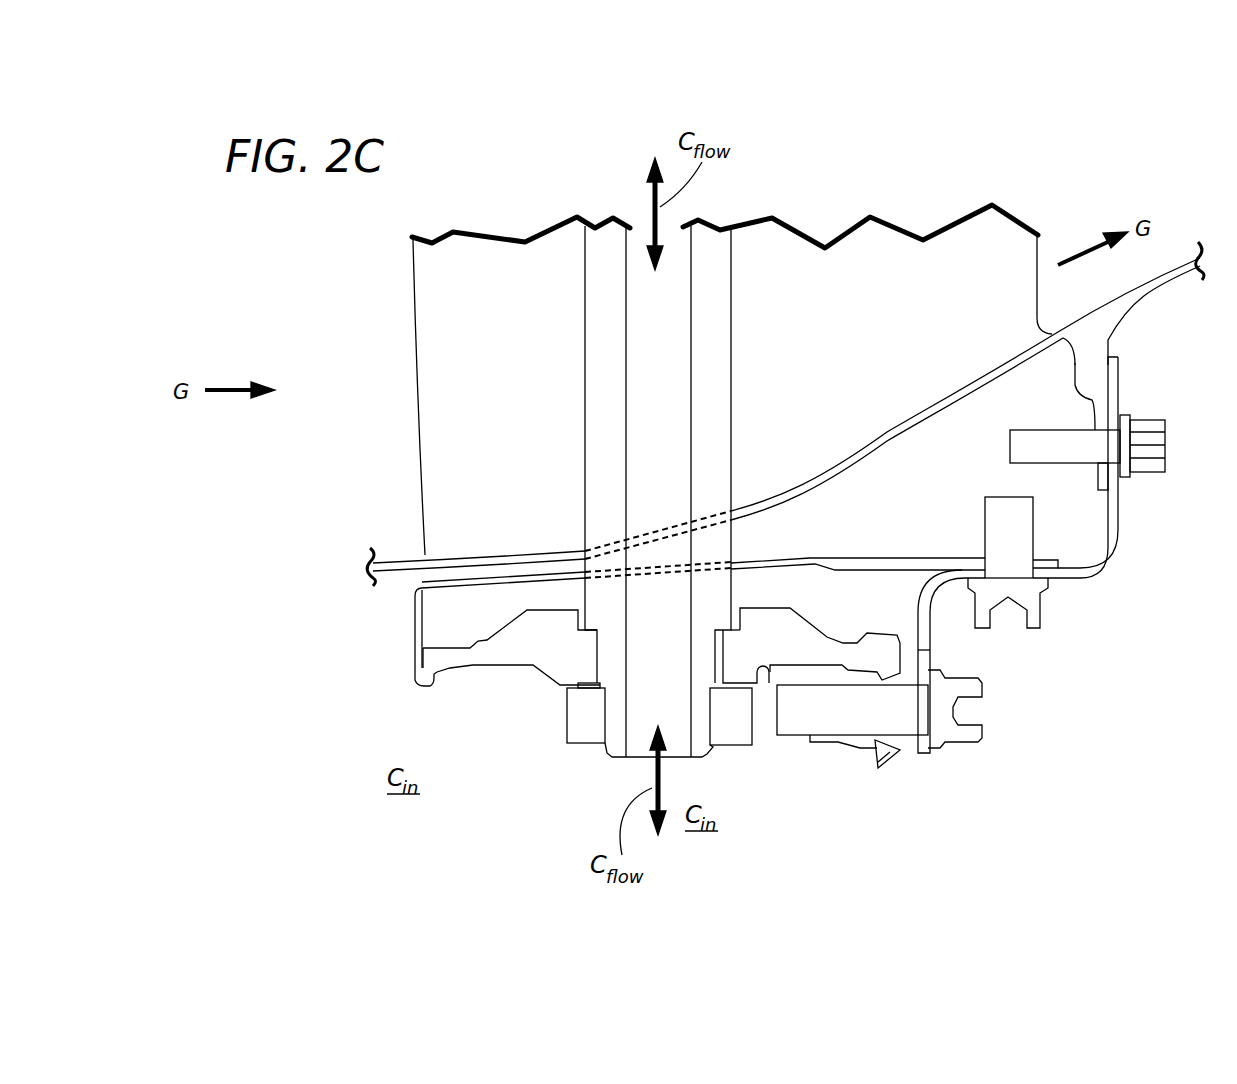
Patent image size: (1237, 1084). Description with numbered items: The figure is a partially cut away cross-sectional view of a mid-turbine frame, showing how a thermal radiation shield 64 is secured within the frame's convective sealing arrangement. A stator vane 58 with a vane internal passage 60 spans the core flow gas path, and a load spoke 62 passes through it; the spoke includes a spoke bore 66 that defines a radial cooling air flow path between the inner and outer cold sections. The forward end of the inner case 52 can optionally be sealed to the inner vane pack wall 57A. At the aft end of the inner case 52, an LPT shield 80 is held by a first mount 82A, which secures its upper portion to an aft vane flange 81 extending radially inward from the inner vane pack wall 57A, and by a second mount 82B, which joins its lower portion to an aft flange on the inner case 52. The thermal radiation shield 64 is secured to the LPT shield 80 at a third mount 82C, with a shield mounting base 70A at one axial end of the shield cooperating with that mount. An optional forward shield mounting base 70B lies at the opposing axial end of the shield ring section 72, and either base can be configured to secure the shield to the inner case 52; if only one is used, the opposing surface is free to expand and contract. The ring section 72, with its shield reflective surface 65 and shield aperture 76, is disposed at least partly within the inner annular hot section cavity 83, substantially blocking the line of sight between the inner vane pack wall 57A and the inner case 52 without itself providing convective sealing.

The inner case 52 is at (558, 660).
The inner vane pack wall 57A is at (385, 540).
The stator vane 58 is at (410, 352).
The vane internal passage 60 is at (708, 512).
The load spoke 62 is at (568, 352).
The thermal radiation shield 64 is at (886, 537).
The shield reflective surface 65 is at (492, 560).
The spoke bore 66 is at (652, 310).
The shield mounting base 70A is at (967, 558).
The forward shield mounting base 70B is at (388, 676).
The shield ring section 72 is at (556, 548).
The shield aperture 76 is at (682, 576).
The LPT rotor shield 80 is at (1120, 588).
The aft vane flange 81 is at (1077, 362).
The first mount 82A is at (1156, 484).
The second mount 82B is at (958, 760).
The third mount 82C is at (1015, 630).
The inner annular hot section cavity 83 is at (812, 537).